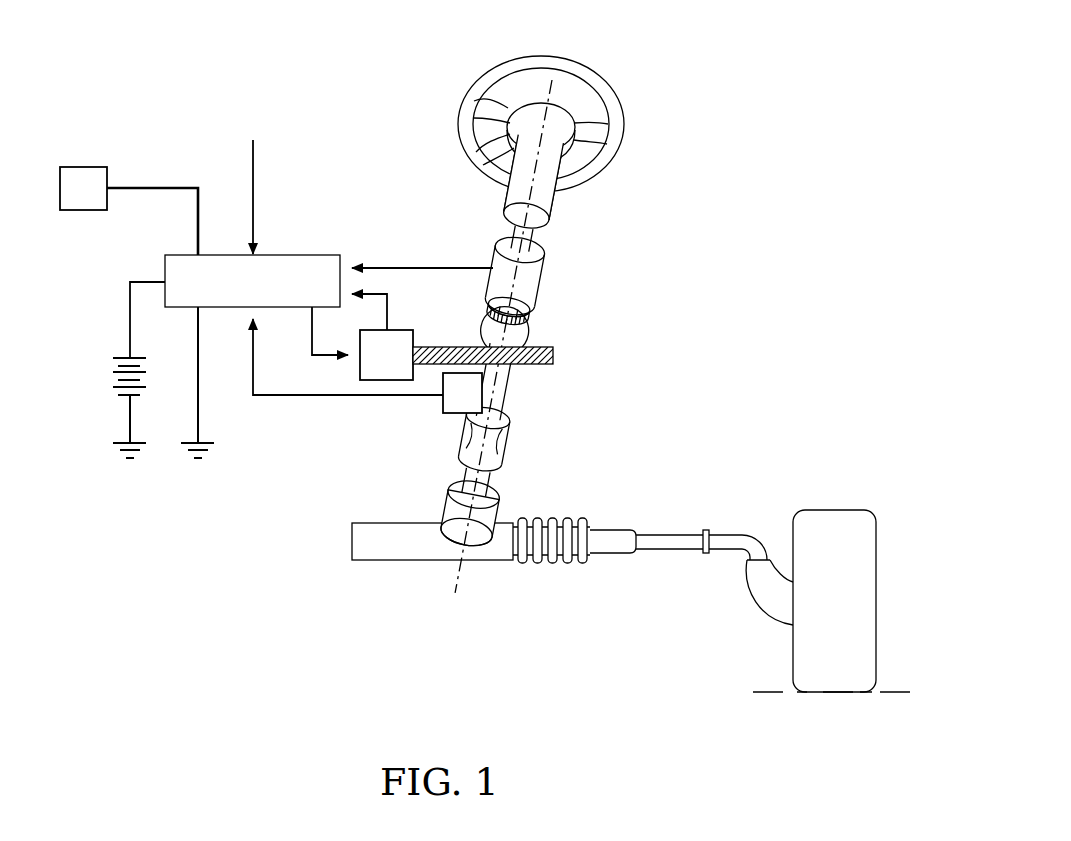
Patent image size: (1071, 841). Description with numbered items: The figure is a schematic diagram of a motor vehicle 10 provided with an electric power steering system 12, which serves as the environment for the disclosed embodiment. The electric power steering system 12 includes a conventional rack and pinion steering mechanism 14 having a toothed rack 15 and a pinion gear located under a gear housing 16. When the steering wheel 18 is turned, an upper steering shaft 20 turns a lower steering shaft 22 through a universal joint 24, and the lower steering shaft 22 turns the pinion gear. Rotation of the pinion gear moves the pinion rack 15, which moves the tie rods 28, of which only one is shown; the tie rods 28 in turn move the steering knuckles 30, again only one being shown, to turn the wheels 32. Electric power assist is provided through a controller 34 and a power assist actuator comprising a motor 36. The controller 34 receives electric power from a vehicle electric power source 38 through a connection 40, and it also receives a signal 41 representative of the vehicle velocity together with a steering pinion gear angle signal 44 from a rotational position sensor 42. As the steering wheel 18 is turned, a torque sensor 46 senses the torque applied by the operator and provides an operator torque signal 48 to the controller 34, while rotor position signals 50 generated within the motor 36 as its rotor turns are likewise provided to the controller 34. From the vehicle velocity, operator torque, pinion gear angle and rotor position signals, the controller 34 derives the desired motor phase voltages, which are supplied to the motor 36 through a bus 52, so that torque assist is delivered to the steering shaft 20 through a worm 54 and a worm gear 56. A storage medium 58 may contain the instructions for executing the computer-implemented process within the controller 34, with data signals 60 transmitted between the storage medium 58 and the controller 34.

The motor vehicle 10 is at (796, 350).
The electric power steering system 12 is at (703, 250).
The rack and pinion steering mechanism 14 is at (577, 518).
The toothed rack 15 is at (372, 545).
The gear housing 16 is at (448, 507).
The steering wheel 18 is at (591, 82).
The upper steering shaft 20 is at (530, 222).
The lower steering shaft 22 is at (485, 478).
The universal joint 24 is at (500, 435).
The tie rod 28 is at (666, 540).
The steering knuckle 30 is at (765, 597).
The wheel 32 is at (855, 517).
The controller 34 is at (228, 255).
The motor 36 is at (408, 330).
The vehicle electric power source 38 is at (113, 378).
The connection 40 is at (130, 327).
The vehicle velocity signal 41 is at (255, 218).
The rotational position sensor 42 is at (440, 405).
The steering pinion gear angle signal 44 is at (338, 400).
The torque sensor 46 is at (535, 268).
The operator torque signal 48 is at (420, 268).
The rotor position signals 50 is at (370, 294).
The bus 52 is at (307, 362).
The worm 54 is at (553, 350).
The worm gear 56 is at (524, 310).
The storage medium 58 is at (82, 167).
The data signal 60 is at (152, 188).